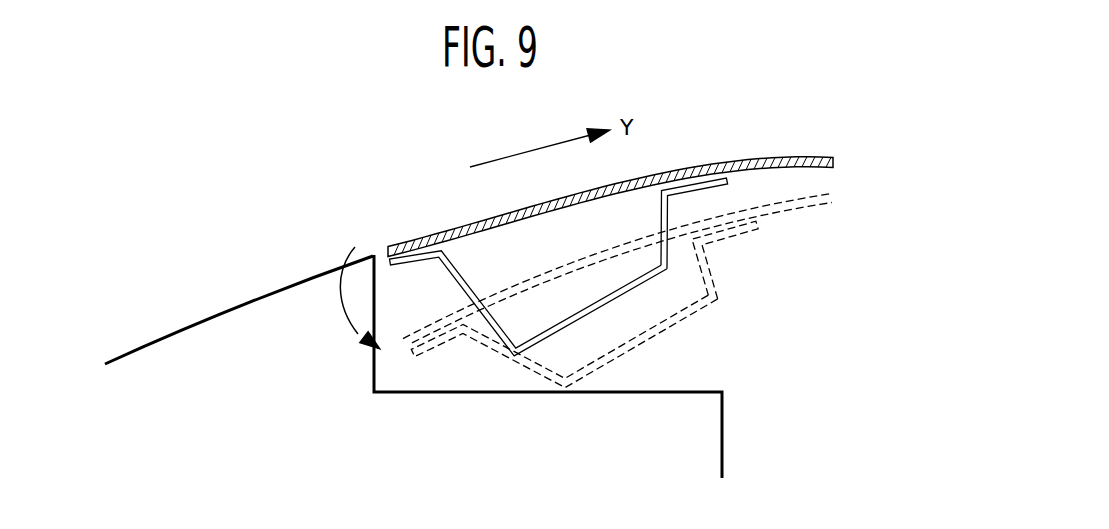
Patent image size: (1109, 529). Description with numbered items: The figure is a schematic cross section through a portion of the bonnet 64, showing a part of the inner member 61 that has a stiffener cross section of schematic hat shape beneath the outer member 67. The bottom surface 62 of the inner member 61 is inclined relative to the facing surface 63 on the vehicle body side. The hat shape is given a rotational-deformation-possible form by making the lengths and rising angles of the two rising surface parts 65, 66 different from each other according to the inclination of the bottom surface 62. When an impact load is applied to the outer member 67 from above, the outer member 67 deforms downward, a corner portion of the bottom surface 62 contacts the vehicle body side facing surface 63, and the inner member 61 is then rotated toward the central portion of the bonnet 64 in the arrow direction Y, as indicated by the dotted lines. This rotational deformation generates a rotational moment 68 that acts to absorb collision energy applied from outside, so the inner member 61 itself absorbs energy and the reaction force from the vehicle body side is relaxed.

The inner member 61 is at (670, 209).
The bottom surface 62 is at (613, 303).
The vehicle body side facing surface 63 is at (493, 390).
The bonnet 64 is at (657, 148).
The rising surface part 65 is at (452, 264).
The rising surface part 66 is at (657, 222).
The outer member 67 is at (718, 165).
The rotational moment 68 is at (345, 292).